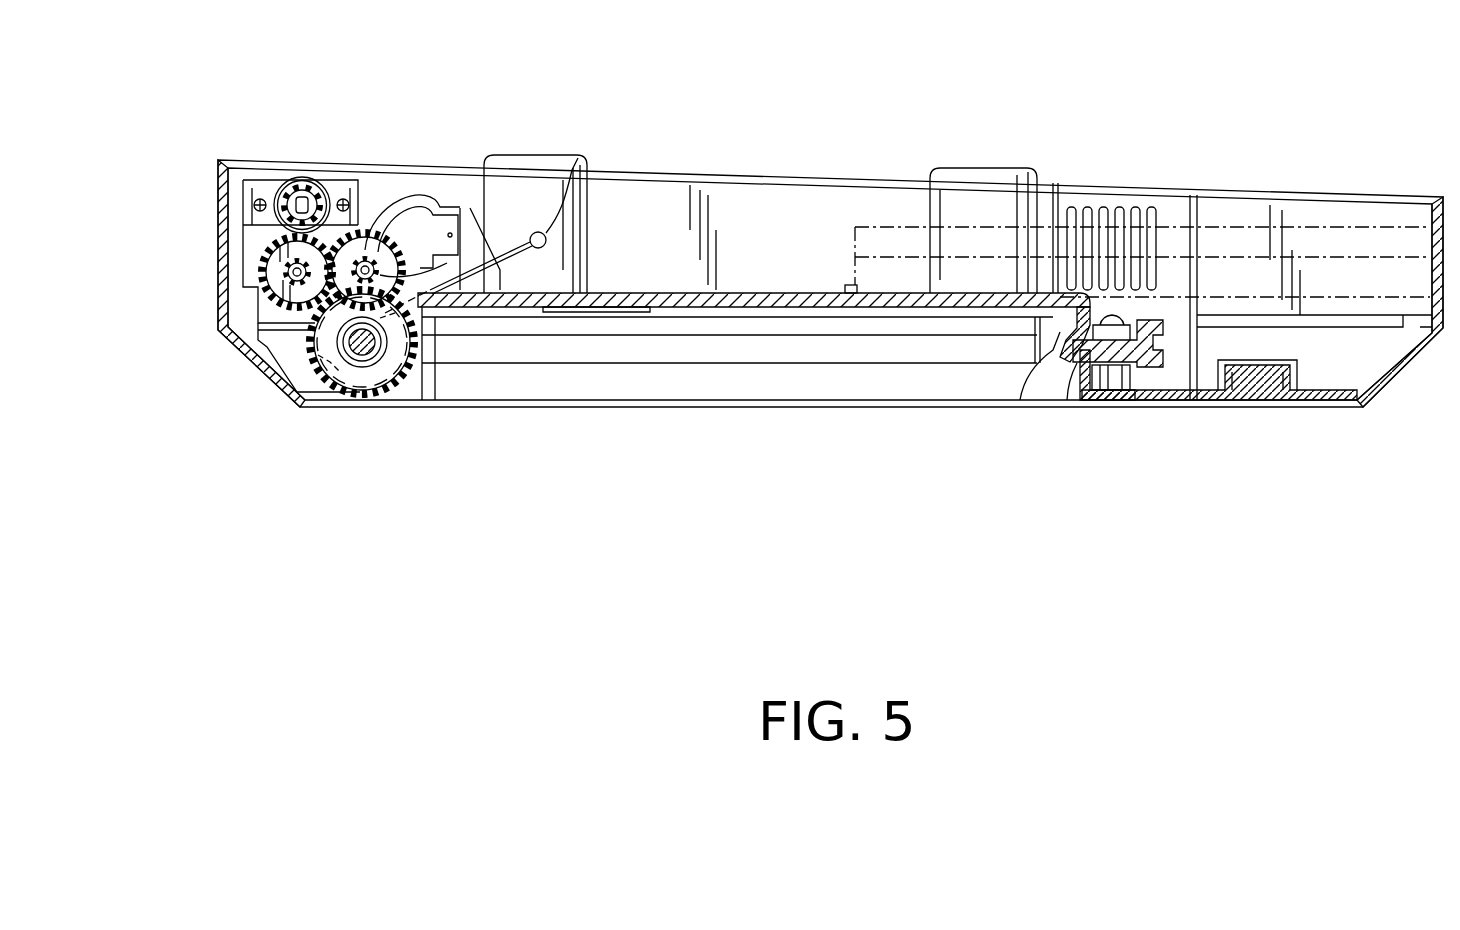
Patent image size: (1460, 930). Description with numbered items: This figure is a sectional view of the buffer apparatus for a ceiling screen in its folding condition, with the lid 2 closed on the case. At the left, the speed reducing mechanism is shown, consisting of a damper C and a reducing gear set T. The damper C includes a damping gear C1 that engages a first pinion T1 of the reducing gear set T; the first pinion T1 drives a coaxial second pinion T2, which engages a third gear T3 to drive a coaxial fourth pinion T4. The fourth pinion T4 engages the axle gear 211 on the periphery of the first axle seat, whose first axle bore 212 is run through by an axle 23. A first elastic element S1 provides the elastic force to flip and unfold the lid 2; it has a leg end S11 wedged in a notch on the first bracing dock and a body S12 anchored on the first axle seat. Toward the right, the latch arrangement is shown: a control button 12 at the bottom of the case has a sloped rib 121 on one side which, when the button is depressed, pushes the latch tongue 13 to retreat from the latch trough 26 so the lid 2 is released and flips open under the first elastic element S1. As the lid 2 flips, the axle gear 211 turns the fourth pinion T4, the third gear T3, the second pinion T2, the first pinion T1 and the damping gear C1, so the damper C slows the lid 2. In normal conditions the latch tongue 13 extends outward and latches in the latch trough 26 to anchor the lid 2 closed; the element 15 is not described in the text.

The lid 2 is at (718, 403).
The control button 12 is at (1123, 400).
The latch tongue 13 is at (1100, 400).
The foot recess 15 is at (1210, 400).
The sloped rib 121 is at (1097, 343).
The latch trough 26 is at (1062, 352).
The reducing gear set T is at (253, 302).
The first pinion T1 is at (250, 228).
The second pinion T2 is at (287, 272).
The third gear T3 is at (363, 230).
The fourth pinion T4 is at (345, 285).
The damper C is at (340, 215).
The damping gear C1 is at (273, 177).
The axle gear 211 is at (352, 205).
The first axle bore 212 is at (390, 350).
The axle 23 is at (368, 362).
The first elastic element S1 is at (397, 367).
The leg end S11 is at (580, 158).
The body S12 is at (325, 365).